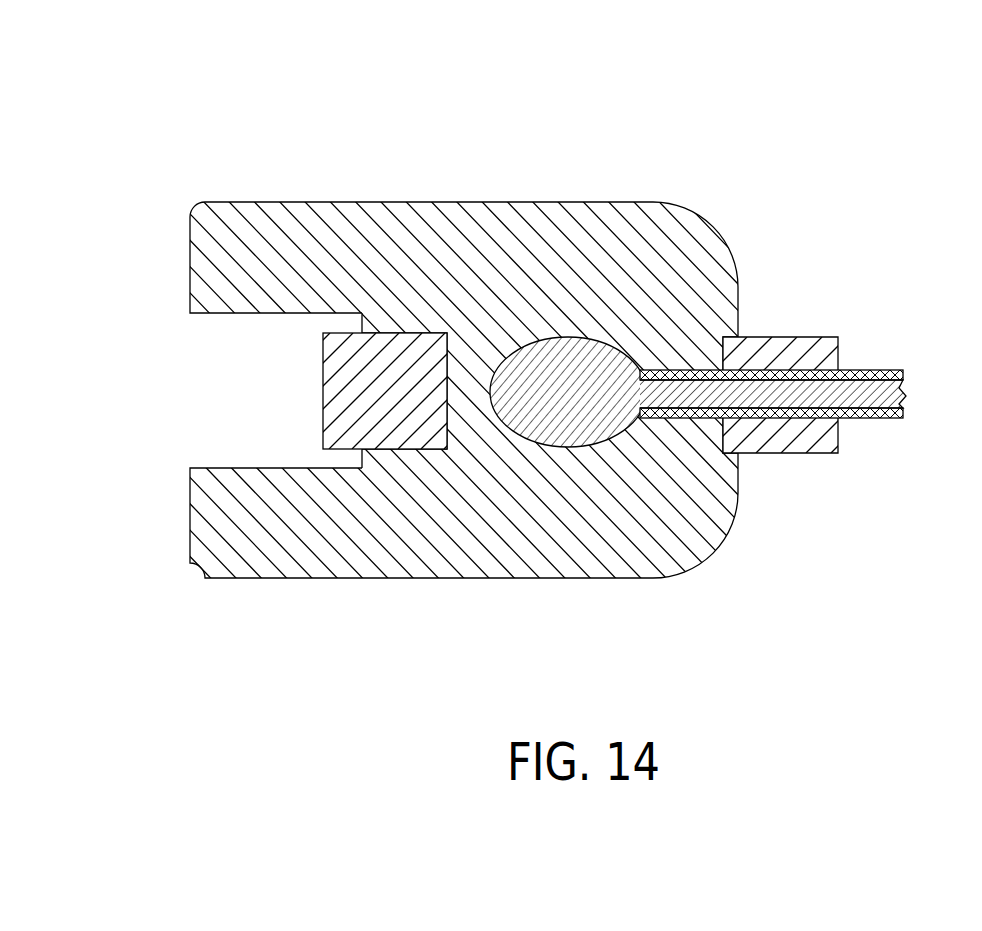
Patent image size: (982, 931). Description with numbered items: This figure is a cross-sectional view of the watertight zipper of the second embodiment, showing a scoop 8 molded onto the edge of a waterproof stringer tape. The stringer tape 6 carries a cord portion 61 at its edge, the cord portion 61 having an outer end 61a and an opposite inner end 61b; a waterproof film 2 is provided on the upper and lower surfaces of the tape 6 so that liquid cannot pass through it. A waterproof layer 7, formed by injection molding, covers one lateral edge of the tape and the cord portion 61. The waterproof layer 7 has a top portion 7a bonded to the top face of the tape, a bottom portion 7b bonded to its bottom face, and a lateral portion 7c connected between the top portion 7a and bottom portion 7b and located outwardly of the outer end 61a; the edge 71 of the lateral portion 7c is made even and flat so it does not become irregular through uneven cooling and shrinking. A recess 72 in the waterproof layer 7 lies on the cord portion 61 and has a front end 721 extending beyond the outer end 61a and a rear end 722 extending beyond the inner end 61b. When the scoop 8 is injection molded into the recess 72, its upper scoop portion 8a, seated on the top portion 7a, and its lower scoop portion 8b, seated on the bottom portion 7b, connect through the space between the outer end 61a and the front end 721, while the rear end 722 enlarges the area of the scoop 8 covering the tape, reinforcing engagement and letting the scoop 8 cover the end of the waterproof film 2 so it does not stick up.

The waterproof film 2 is at (883, 372).
The tape 6 is at (900, 397).
The waterproof layer 7 is at (685, 623).
The top portion 7a is at (788, 352).
The bottom portion 7b is at (753, 434).
The lateral portion 7c is at (390, 405).
The scoop 8 is at (63, 290).
The upper scoop portion 8a is at (190, 262).
The lower scoop portion 8b is at (190, 495).
The cord portion 61 is at (573, 363).
The outer end 61a is at (490, 393).
The inner end 61b is at (645, 366).
The edge 71 is at (323, 367).
The recess 72 is at (718, 330).
The front end 721 is at (452, 333).
The rear end 722 is at (720, 357).